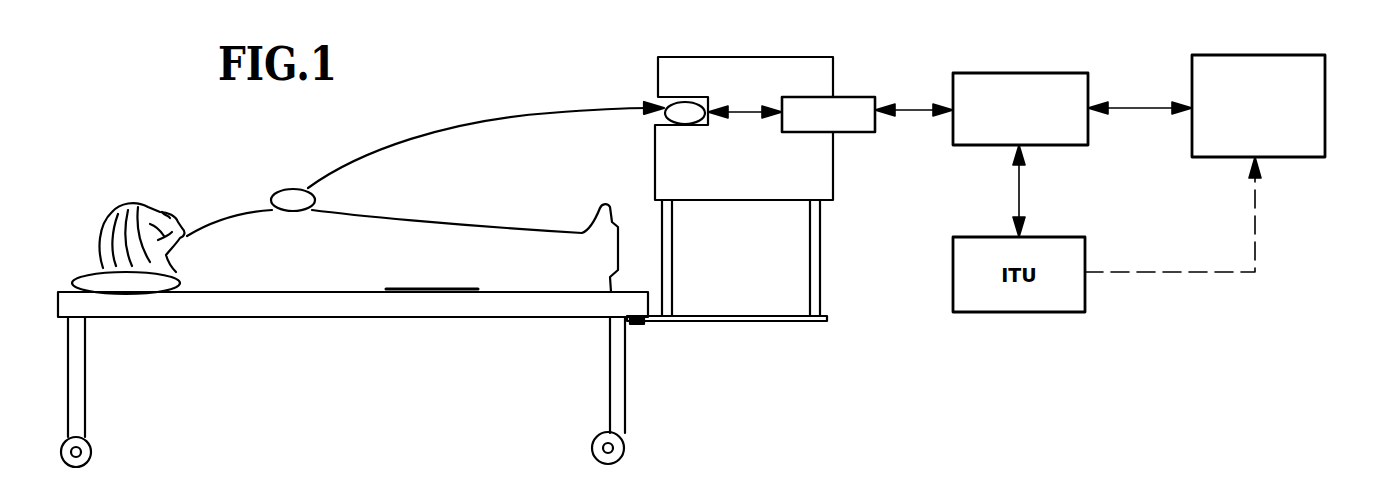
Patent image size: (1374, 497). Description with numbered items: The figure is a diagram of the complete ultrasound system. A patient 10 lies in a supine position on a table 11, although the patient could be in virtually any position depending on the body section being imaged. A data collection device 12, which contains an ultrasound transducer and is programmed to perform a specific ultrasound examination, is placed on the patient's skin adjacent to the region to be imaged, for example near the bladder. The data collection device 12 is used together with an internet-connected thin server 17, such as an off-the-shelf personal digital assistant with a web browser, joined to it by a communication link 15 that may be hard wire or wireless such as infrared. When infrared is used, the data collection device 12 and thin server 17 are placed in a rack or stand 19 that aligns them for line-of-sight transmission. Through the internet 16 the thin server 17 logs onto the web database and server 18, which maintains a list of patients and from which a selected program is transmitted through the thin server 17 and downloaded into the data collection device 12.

The patient 10 is at (315, 314).
The table 11 is at (625, 385).
The data collection device 12 is at (290, 190).
The communication link 15 is at (748, 112).
The internet 16 is at (1018, 73).
The thin server 17 is at (848, 97).
The web database and server 18 is at (1250, 55).
The rack or stand 19 is at (833, 178).